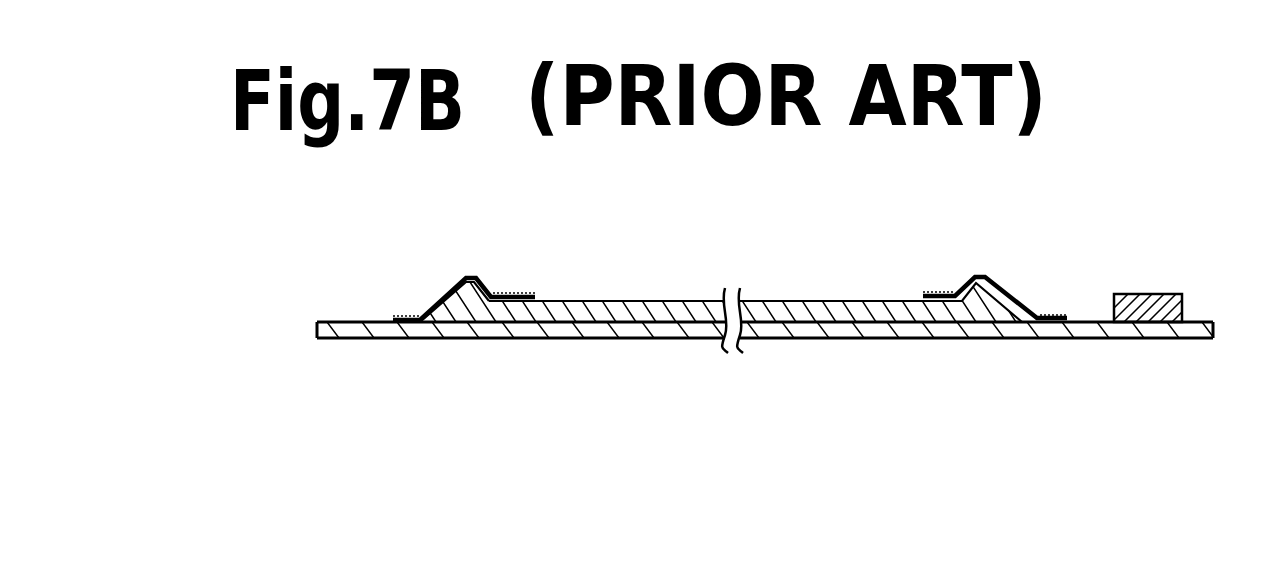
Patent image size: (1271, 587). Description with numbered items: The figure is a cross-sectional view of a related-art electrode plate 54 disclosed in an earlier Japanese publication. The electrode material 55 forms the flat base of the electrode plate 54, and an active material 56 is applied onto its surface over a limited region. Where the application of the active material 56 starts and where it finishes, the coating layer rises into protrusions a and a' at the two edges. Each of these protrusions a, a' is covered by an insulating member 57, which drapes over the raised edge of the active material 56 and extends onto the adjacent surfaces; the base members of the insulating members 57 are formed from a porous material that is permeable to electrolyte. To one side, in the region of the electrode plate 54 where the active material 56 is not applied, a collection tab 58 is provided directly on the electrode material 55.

The electrode plate 54 is at (1118, 190).
The electrode material 55 is at (840, 340).
The active material 56 is at (830, 300).
The insulating member 57 is at (490, 279).
The collection tab 58 is at (1147, 293).
The protrusion a is at (435, 218).
The protrusion a' is at (1022, 222).